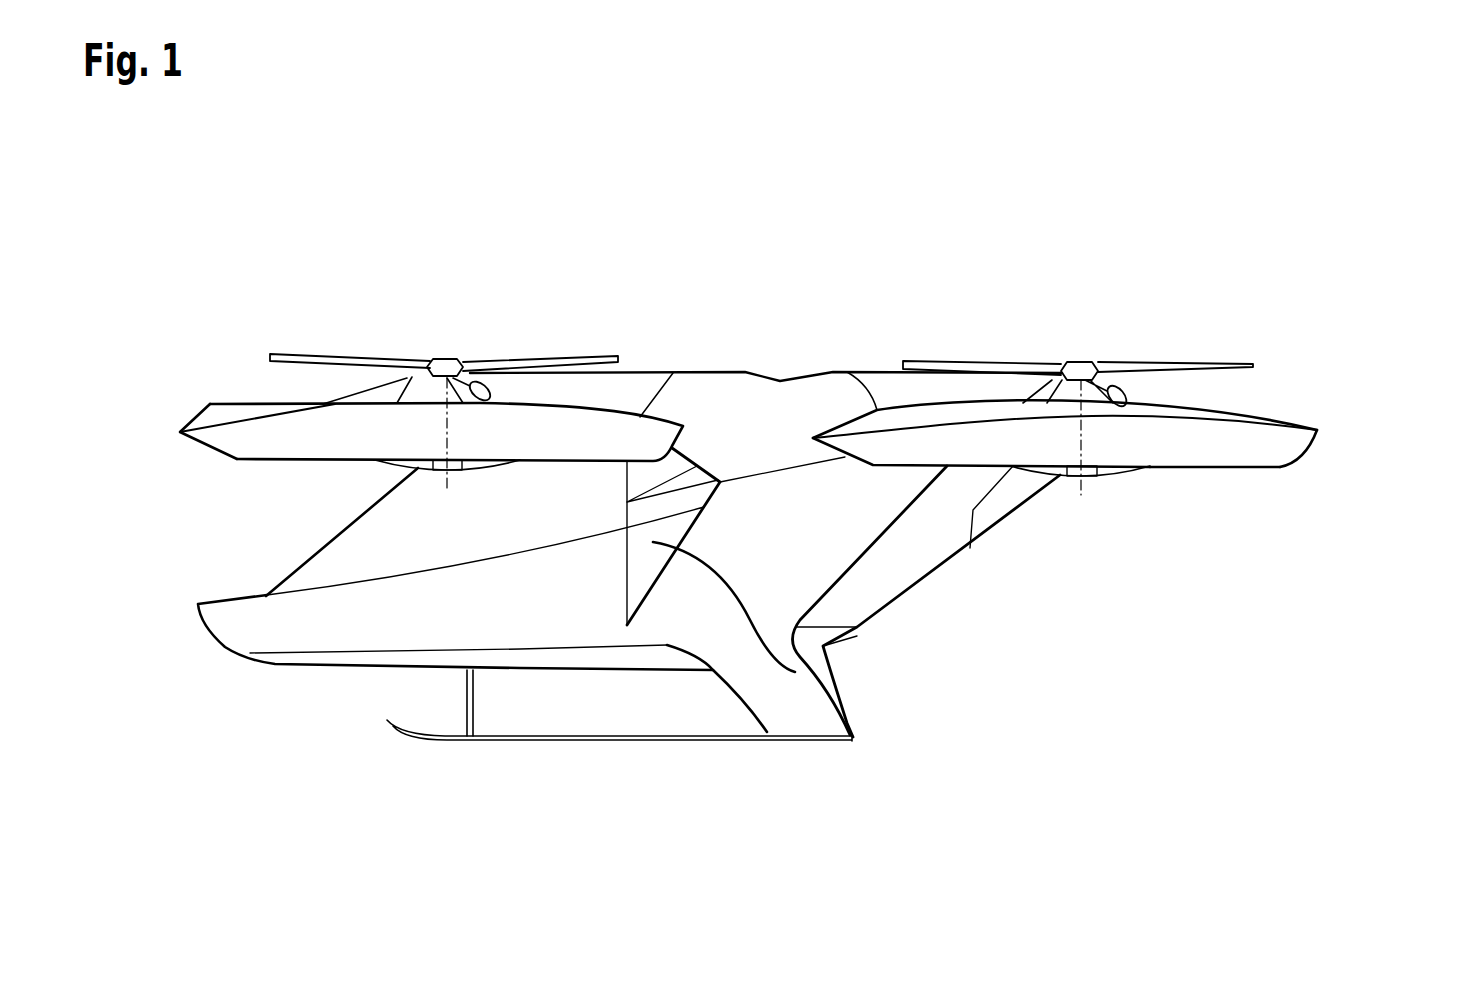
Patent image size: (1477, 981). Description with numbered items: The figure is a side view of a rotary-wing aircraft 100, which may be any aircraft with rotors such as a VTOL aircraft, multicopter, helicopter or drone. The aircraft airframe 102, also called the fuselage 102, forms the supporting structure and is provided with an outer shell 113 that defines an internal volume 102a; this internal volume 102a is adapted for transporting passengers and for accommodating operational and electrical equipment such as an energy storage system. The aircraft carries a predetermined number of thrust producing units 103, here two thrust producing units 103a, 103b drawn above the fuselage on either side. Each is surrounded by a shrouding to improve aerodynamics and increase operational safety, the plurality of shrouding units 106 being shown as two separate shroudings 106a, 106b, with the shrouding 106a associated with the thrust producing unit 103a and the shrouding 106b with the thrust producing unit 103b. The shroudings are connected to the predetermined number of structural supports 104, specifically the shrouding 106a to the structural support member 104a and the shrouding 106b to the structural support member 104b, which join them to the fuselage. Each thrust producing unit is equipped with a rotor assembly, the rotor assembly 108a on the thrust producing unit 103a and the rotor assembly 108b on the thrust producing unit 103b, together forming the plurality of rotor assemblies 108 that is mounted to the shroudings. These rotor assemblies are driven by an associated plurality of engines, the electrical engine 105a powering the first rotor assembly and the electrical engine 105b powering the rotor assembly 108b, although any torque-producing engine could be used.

The rotary-wing aircraft 100 is at (252, 200).
The aircraft airframe 102 is at (300, 615).
The internal volume 102a is at (340, 550).
The thrust producing units 103 is at (1303, 412).
The thrust producing unit 103a is at (340, 379).
The thrust producing unit 103b is at (1205, 392).
The structural supports 104 is at (1056, 500).
The structural support member 104a is at (478, 465).
The structural support member 104b is at (1103, 478).
The electrical engine 105a is at (503, 383).
The electrical engine 105b is at (1033, 388).
The shrouding units 106 is at (1333, 447).
The shrouding 106a is at (225, 421).
The shrouding 106b is at (1270, 447).
The rotor assemblies 108 is at (1228, 357).
The rotor assembly 108a is at (387, 367).
The rotor assembly 108b is at (1130, 373).
The outer shell 113 is at (795, 672).